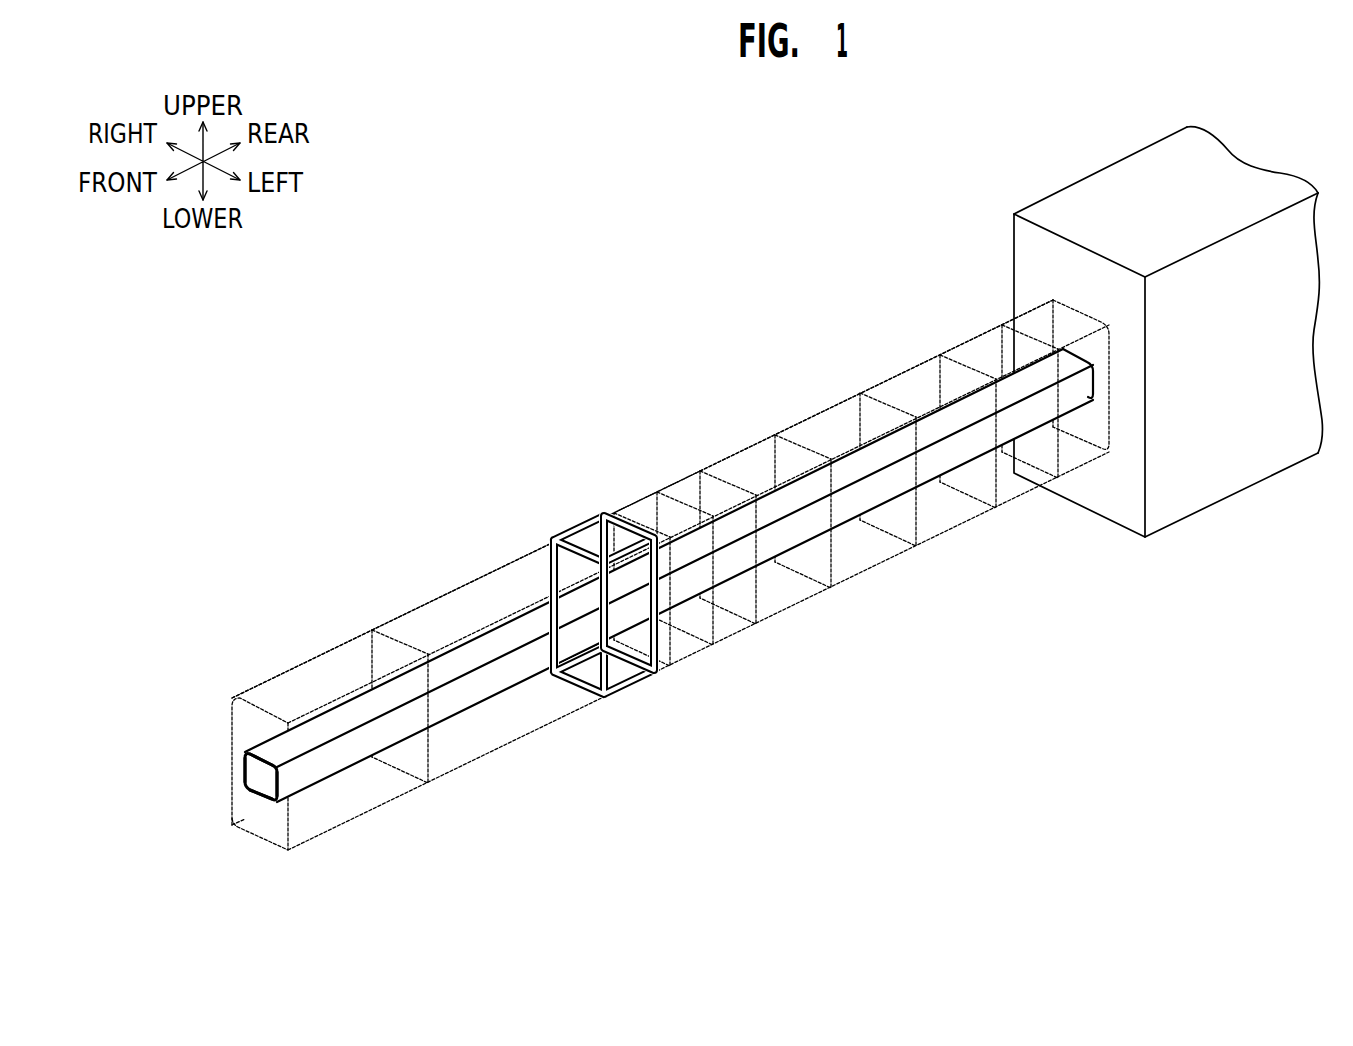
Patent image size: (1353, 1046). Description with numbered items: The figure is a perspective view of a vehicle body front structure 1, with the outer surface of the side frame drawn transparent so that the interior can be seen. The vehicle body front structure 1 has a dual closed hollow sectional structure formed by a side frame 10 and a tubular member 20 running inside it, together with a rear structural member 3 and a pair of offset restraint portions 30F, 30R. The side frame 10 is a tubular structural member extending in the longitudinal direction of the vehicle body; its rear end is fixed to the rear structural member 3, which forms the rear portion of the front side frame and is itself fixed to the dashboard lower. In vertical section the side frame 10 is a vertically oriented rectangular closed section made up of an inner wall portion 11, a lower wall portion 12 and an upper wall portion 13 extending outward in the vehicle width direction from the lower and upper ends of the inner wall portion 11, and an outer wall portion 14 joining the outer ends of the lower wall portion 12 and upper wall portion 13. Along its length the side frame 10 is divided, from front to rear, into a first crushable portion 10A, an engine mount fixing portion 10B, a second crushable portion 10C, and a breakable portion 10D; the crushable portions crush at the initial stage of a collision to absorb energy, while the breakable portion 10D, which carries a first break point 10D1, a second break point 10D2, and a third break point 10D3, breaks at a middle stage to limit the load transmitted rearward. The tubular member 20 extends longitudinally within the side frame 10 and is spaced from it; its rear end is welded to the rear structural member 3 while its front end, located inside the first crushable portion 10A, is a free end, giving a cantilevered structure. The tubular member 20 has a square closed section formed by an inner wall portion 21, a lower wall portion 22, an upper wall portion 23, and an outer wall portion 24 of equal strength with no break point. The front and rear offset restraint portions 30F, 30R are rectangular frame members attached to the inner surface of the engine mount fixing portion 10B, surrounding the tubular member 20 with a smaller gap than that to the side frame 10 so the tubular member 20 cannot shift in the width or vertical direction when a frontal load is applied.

The vehicle body front structure 1 is at (652, 258).
The rear structural member 3 is at (1101, 183).
The side frame 10 is at (440, 478).
The first crushable portion 10A is at (285, 687).
The engine mount fixing portion 10B is at (492, 583).
The second crushable portion 10C is at (645, 508).
The breakable portion 10D is at (828, 416).
The first break point 10D1 is at (728, 625).
The second break point 10D2 is at (870, 553).
The third break point 10D3 is at (1008, 487).
The inner wall portion 11 is at (373, 797).
The lower wall portion 12 is at (268, 832).
The upper wall portion 13 is at (340, 660).
The outer wall portion 14 is at (232, 718).
The tubular member 20 is at (500, 680).
The inner wall portion 21 is at (283, 781).
The lower wall portion 22 is at (244, 796).
The upper wall portion 23 is at (268, 747).
The outer wall portion 24 is at (243, 765).
The front offset restraint portion 30F is at (578, 538).
The rear offset restraint portion 30R is at (606, 514).